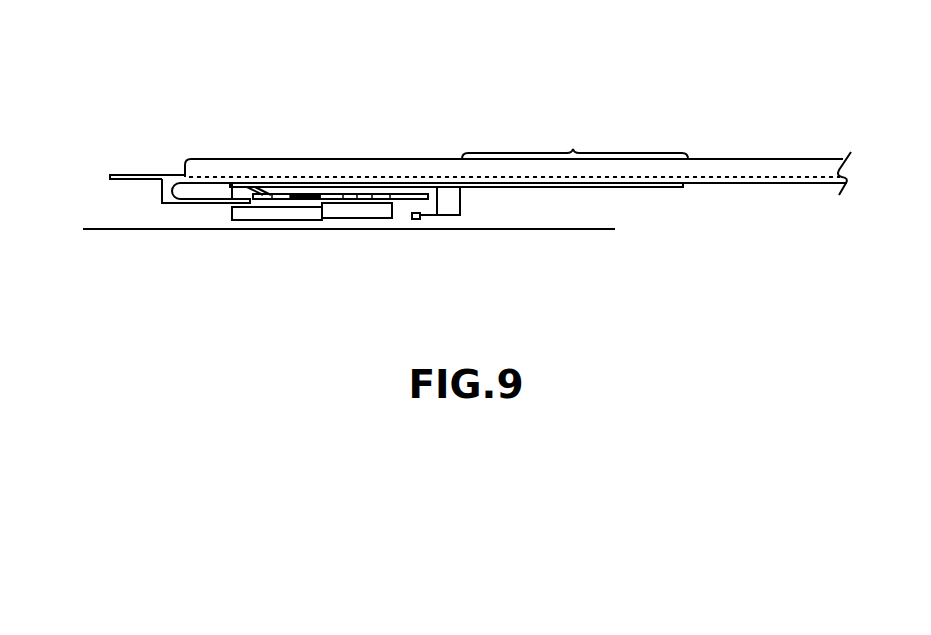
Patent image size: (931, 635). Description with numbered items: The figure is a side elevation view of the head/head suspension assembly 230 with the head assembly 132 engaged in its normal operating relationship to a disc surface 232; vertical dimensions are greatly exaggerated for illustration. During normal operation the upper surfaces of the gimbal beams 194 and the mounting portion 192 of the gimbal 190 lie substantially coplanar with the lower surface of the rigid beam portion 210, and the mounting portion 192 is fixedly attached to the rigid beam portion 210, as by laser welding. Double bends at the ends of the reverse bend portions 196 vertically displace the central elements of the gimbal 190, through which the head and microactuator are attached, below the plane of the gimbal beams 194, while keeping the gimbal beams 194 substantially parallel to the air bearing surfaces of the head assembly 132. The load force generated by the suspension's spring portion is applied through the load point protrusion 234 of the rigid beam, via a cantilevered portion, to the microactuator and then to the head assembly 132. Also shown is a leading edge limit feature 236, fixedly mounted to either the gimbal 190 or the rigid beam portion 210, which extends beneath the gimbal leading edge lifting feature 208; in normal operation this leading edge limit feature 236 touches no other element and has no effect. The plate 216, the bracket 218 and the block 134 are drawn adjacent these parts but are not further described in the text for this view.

The head/head suspension assembly 230 is at (147, 87).
The plate 216 is at (133, 175).
The load point protrusion 234 is at (277, 194).
The reverse bend portions 196 is at (238, 182).
The gimbal beams 194 is at (338, 194).
The mounting portion 192 is at (573, 150).
The rigid beam portion 210 is at (796, 170).
The leading edge limit feature 236 is at (448, 205).
The gimbal 190 is at (660, 187).
The bracket housing 218 is at (200, 204).
The disc surface 232 is at (100, 229).
The head assembly 132 is at (277, 220).
The block 134 is at (363, 200).
The gimbal leading edge lifting feature 208 is at (418, 199).